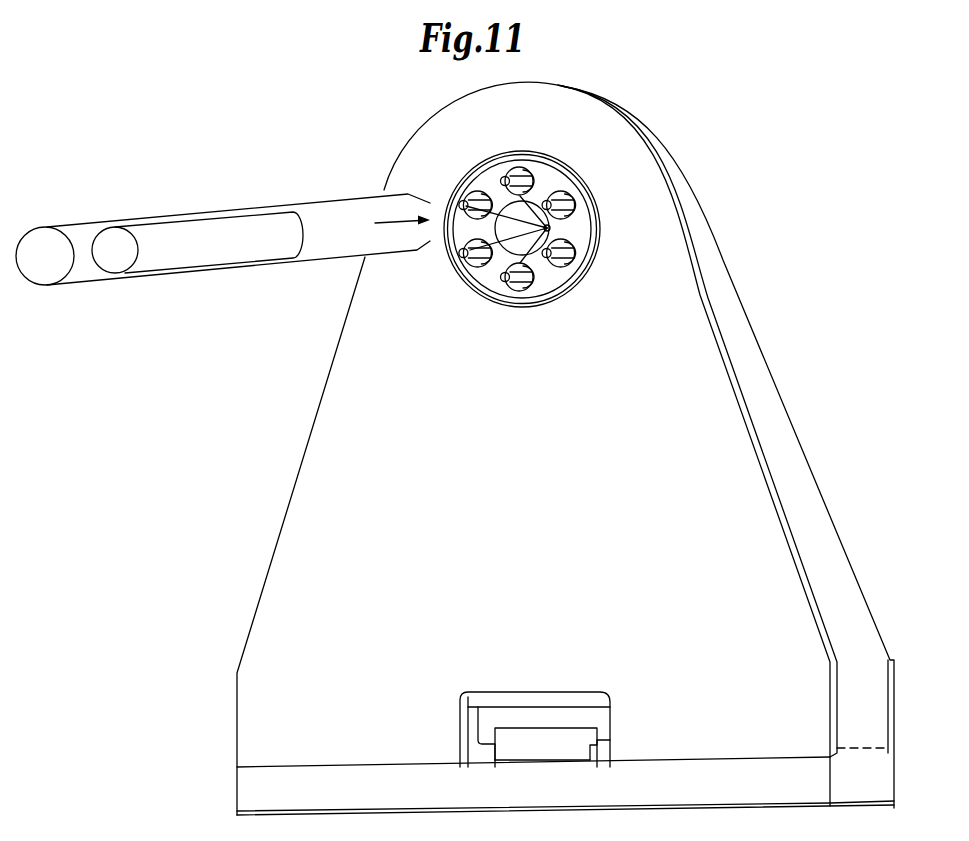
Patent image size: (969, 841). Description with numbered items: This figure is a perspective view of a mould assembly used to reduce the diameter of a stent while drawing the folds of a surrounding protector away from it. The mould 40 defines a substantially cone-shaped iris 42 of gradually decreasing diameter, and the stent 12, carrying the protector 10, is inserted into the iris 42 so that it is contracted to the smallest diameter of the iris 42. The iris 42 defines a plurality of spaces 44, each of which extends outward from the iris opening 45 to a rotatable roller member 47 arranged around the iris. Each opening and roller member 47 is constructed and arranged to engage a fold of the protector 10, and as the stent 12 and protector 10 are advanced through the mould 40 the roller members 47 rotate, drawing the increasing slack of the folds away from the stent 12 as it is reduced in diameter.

The protector 10 is at (298, 204).
The stent 12 is at (207, 218).
The mould 40 is at (652, 119).
The iris 42 is at (541, 198).
The spaces 44 is at (520, 197).
The iris opening 45 is at (550, 228).
The rotatable roller member 47 is at (574, 203).